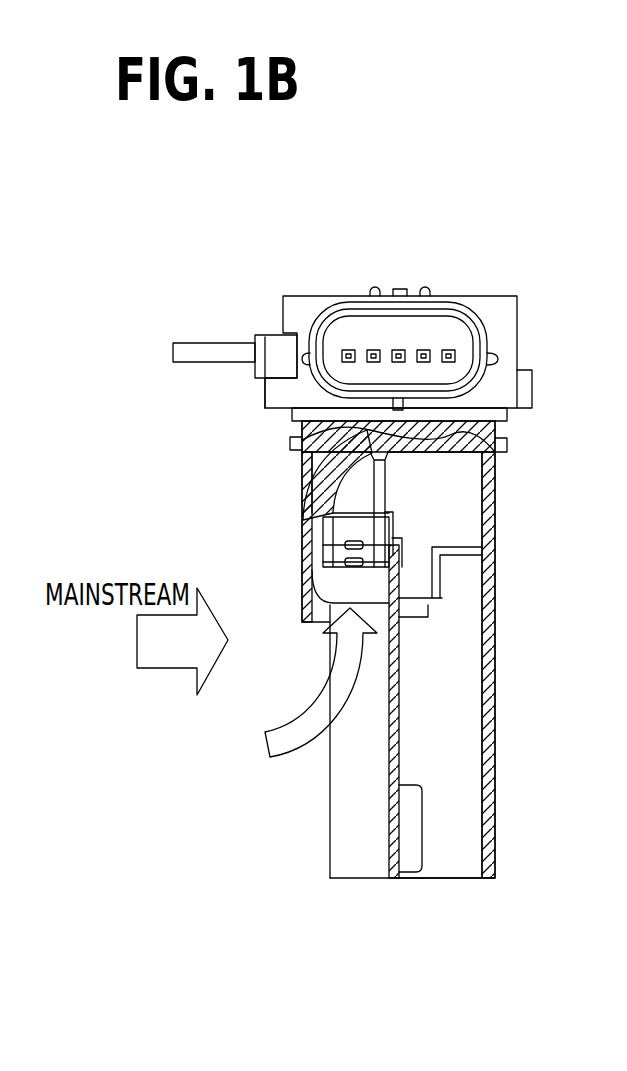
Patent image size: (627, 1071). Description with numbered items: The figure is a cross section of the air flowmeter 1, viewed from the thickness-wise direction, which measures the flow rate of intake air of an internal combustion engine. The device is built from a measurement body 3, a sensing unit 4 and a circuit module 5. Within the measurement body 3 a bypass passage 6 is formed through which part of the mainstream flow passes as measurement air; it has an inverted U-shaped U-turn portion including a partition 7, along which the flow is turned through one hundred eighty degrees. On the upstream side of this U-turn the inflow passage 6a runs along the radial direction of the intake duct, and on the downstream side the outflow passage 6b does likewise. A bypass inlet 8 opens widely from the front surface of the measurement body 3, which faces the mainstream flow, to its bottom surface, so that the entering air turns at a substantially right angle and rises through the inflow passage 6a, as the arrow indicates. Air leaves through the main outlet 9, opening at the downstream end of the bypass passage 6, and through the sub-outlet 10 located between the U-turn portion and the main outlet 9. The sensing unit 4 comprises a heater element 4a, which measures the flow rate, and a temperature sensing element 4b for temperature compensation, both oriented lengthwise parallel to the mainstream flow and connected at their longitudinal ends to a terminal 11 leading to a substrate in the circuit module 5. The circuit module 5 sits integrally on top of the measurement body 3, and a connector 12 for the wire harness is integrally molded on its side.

The air flowmeter 1 is at (553, 294).
The measurement body 3 is at (497, 633).
The sensing unit 4 is at (188, 470).
The heater element 4a is at (350, 543).
The temperature sensing element 4b is at (350, 560).
The circuit module 5 is at (508, 298).
The bypass passage 6 is at (415, 639).
The inflow passage 6a is at (343, 774).
The outflow passage 6b is at (472, 725).
The partition 7 is at (407, 757).
The bypass inlet 8 is at (297, 678).
The main outlet 9 is at (408, 832).
The sub-outlet 10 is at (400, 603).
The terminal 11 is at (385, 485).
The connector 12 is at (343, 300).